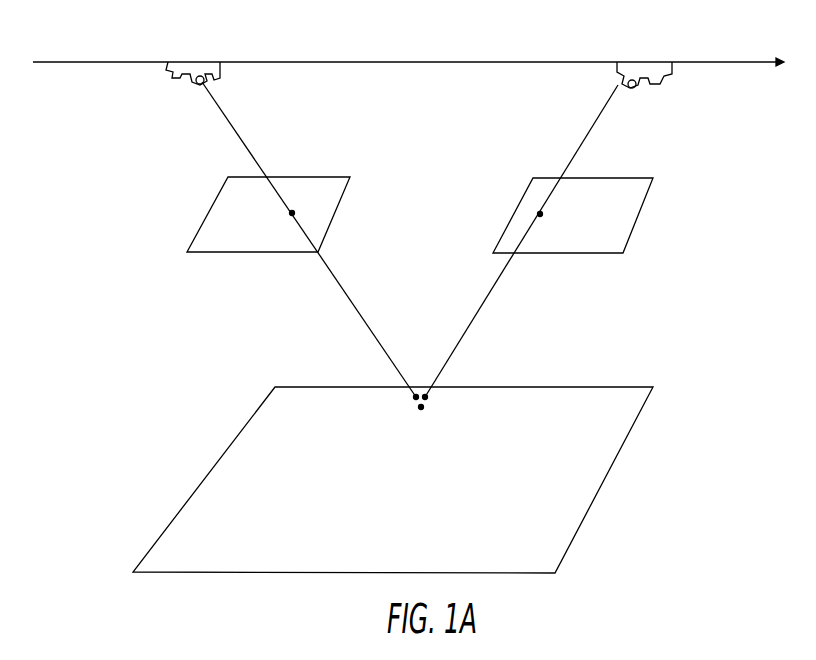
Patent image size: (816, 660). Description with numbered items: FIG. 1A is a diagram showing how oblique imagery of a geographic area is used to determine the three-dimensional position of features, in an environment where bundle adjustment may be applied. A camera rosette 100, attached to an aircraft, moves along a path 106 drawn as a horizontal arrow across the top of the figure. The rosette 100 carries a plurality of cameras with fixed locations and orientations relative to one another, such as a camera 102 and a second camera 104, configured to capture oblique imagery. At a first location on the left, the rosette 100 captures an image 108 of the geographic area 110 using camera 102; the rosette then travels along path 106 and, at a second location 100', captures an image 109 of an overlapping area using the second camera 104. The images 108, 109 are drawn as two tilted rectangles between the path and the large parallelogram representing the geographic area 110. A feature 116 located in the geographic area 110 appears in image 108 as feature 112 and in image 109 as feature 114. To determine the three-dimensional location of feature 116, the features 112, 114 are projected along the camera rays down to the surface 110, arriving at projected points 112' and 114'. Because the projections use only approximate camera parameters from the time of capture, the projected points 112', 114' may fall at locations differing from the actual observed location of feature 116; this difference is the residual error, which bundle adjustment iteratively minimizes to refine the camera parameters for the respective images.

The camera rosette 100 is at (215, 58).
The second location 100' is at (669, 59).
The camera 102 is at (200, 87).
The second camera 104 is at (640, 92).
The path 106 is at (418, 62).
The image 108 is at (320, 177).
The image 109 is at (612, 178).
The geographic area 110 is at (512, 387).
The feature 112 is at (342, 228).
The projected feature 112' is at (359, 377).
The feature 114 is at (496, 201).
The projected feature 114' is at (439, 351).
The feature 116 is at (421, 407).